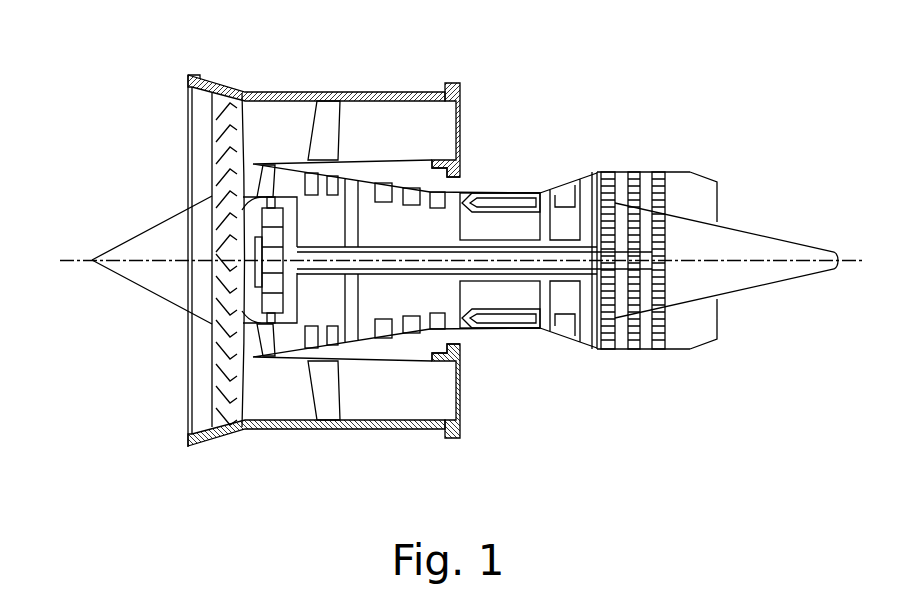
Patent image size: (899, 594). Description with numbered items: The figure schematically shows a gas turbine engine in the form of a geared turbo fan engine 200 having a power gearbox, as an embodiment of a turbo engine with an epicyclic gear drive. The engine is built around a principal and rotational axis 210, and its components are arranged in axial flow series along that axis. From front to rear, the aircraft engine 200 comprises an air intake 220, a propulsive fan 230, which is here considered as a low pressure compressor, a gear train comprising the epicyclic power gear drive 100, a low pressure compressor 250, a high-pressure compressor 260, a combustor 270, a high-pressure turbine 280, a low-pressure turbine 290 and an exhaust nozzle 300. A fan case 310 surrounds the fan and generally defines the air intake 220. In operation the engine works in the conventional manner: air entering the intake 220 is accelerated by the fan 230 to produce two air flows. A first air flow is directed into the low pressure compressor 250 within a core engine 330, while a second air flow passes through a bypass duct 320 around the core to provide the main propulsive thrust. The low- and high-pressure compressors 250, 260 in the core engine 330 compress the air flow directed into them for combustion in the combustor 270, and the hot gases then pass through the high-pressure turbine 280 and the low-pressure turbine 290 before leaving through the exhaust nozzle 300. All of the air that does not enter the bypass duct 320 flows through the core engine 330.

The epicyclic power gear drive 100 is at (272, 307).
The geared turbo fan engine 200 is at (443, 248).
The principal and rotational axis 210 is at (72, 258).
The air intake 220 is at (178, 108).
The propulsive fan 230 is at (226, 356).
The low pressure compressor 250 is at (333, 172).
The high-pressure compressor 260 is at (430, 302).
The combustor 270 is at (503, 320).
The high-pressure turbine 280 is at (546, 197).
The low-pressure turbine 290 is at (633, 192).
The exhaust nozzle 300 is at (707, 197).
The fan case 310 is at (352, 91).
The bypass duct 320 is at (443, 123).
The core engine 330 is at (428, 180).